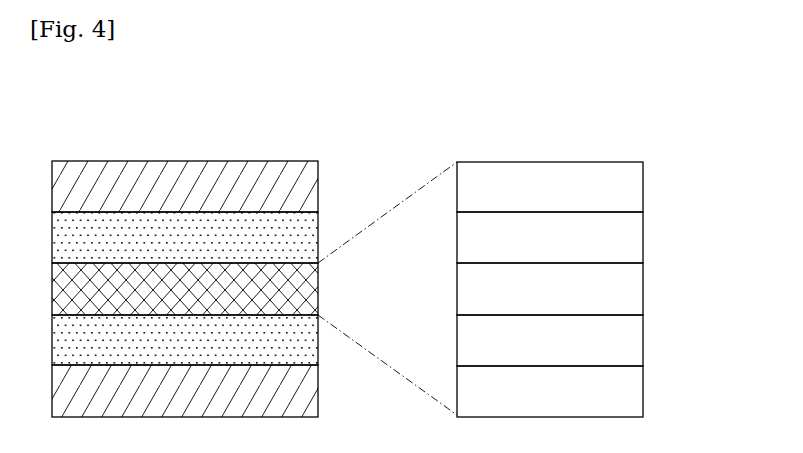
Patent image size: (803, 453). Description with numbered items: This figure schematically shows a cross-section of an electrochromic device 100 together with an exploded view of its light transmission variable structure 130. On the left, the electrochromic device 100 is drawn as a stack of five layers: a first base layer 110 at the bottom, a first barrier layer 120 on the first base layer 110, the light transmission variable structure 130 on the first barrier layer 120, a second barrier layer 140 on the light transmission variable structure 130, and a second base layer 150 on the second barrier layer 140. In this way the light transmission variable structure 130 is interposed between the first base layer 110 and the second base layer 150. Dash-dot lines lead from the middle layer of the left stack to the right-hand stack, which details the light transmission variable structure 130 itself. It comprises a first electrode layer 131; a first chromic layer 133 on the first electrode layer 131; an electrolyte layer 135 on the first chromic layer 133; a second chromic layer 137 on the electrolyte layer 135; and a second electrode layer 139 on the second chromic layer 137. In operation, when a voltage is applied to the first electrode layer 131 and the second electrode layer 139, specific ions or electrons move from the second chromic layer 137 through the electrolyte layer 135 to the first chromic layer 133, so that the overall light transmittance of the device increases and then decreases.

The electrochromic device 100 is at (333, 114).
The first base layer 110 is at (185, 391).
The first barrier layer 120 is at (185, 340).
The light transmission variable structure 130 is at (185, 289).
The first electrode layer 131 is at (550, 391).
The first chromic layer 133 is at (550, 340).
The electrolyte layer 135 is at (550, 289).
The second chromic layer 137 is at (550, 237).
The second electrode layer 139 is at (550, 187).
The second barrier layer 140 is at (185, 237).
The second base layer 150 is at (185, 186).